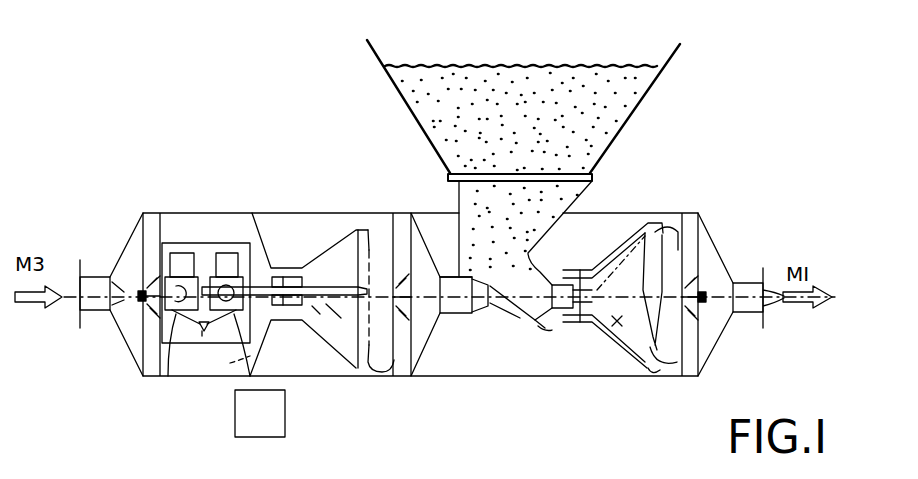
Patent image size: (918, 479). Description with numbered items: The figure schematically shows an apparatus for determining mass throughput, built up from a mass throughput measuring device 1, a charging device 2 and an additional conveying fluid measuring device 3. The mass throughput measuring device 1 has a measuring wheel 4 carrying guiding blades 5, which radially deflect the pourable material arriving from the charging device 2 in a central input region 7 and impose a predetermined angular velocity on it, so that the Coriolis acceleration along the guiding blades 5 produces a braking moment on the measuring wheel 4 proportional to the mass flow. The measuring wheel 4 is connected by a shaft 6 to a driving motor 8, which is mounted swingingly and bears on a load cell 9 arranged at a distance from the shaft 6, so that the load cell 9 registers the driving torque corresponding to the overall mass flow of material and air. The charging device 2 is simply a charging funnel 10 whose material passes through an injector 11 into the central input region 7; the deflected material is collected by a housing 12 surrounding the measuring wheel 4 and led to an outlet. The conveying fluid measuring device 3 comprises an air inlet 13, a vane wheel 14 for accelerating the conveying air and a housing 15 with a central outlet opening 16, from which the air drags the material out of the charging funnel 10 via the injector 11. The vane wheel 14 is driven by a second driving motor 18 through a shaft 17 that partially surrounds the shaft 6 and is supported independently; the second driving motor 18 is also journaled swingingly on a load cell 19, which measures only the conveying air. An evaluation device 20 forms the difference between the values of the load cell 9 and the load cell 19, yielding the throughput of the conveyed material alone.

The mass throughput measuring device 1 is at (645, 213).
The charging device 2 is at (580, 206).
The conveying fluid measuring device 3 is at (325, 214).
The measuring wheel 4 is at (648, 372).
The guiding blades 5 is at (613, 318).
The shaft 6 is at (516, 306).
The central input region 7 is at (571, 310).
The driving motor 8 is at (178, 253).
The load cell 9 is at (201, 329).
The charging funnel 10 is at (421, 130).
The injector 11 is at (548, 318).
The housing 12 is at (676, 213).
The air inlet 13 is at (100, 277).
The vane wheel 14 is at (360, 345).
The housing 15 is at (388, 368).
The outlet opening 16 is at (480, 318).
The shaft 17 is at (298, 308).
The second driving motor 18 is at (225, 253).
The load cell 19 is at (188, 329).
The evaluation device 20 is at (237, 438).